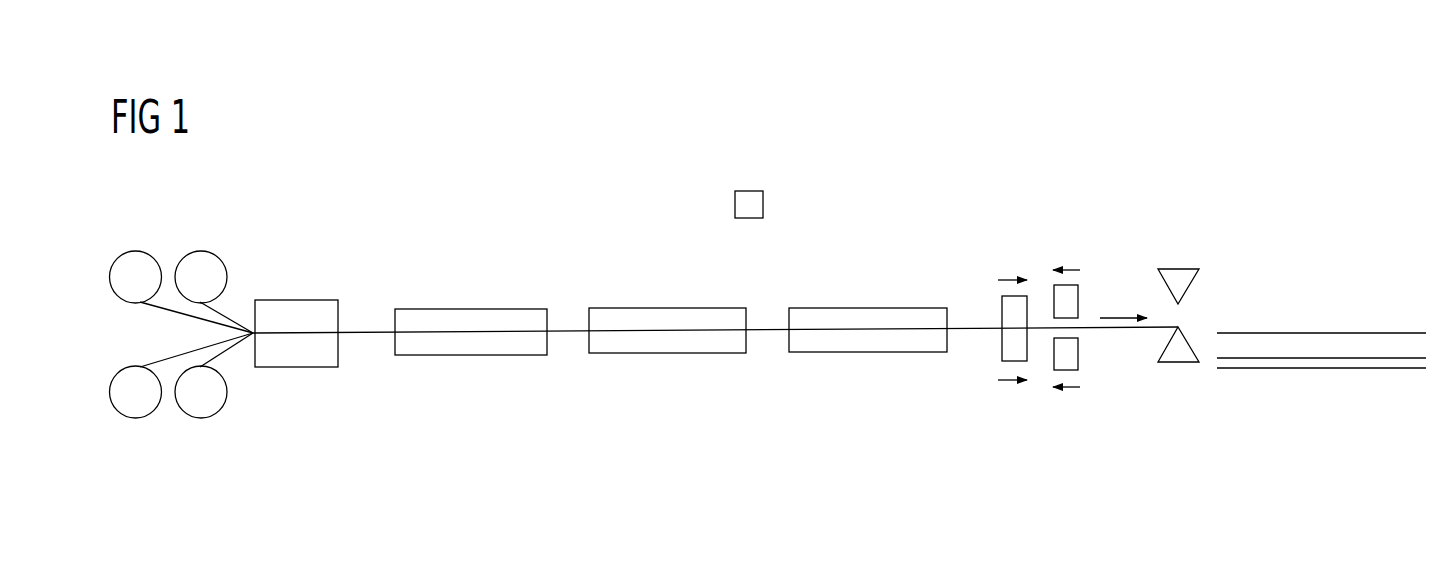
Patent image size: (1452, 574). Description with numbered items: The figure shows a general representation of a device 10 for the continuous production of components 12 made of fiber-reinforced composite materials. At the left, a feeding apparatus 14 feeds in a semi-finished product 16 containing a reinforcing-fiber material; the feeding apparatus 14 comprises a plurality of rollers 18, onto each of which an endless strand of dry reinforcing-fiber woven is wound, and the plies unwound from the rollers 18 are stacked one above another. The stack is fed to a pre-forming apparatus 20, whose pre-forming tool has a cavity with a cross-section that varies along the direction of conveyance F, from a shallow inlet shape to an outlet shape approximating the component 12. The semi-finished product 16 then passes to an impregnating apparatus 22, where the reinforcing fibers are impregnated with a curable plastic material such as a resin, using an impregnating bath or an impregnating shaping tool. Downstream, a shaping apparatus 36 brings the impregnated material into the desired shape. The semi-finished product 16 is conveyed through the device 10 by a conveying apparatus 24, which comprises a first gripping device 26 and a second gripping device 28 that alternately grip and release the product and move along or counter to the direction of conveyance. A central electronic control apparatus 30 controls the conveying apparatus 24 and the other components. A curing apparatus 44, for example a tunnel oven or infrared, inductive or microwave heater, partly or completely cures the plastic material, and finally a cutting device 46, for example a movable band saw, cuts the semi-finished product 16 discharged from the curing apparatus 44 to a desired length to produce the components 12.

The device 10 is at (989, 148).
The component 12 is at (1327, 332).
The feeding apparatus 14 is at (210, 234).
The semi-finished product 16 is at (360, 330).
The rollers 18 is at (200, 258).
The pre-forming apparatus 20 is at (295, 312).
The impregnating apparatus 22 is at (473, 320).
The conveying apparatus 24 is at (1069, 252).
The first gripping device 26 is at (1010, 310).
The second gripping device 28 is at (1065, 298).
The control apparatus 30 is at (765, 203).
The shaping apparatus 36 is at (667, 300).
The curing apparatus 44 is at (870, 318).
The cutting device 46 is at (1197, 278).